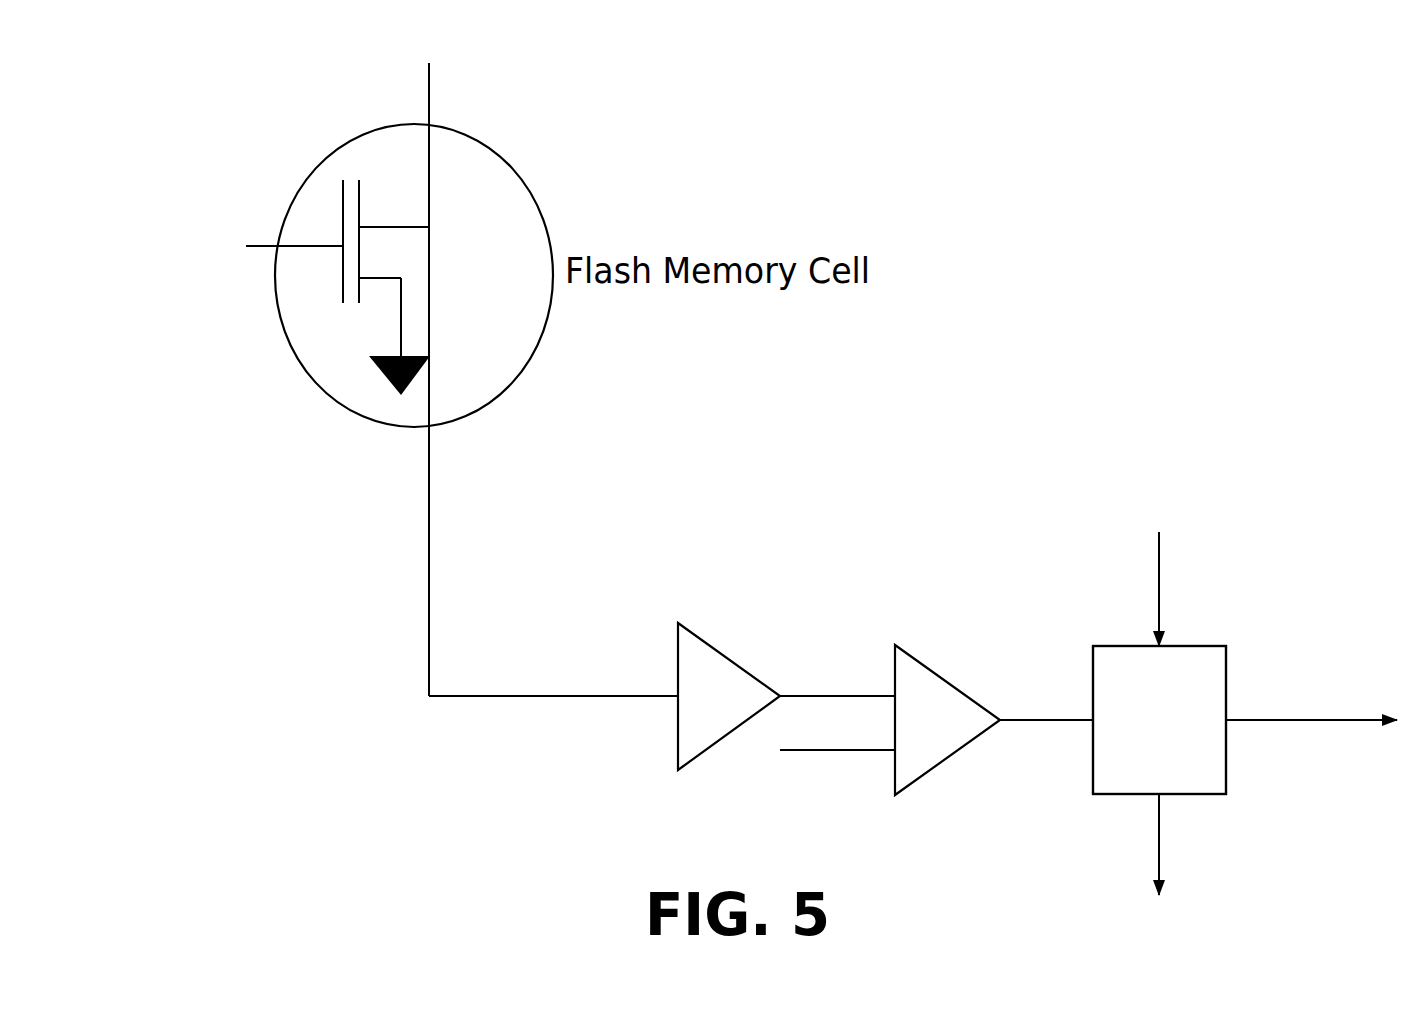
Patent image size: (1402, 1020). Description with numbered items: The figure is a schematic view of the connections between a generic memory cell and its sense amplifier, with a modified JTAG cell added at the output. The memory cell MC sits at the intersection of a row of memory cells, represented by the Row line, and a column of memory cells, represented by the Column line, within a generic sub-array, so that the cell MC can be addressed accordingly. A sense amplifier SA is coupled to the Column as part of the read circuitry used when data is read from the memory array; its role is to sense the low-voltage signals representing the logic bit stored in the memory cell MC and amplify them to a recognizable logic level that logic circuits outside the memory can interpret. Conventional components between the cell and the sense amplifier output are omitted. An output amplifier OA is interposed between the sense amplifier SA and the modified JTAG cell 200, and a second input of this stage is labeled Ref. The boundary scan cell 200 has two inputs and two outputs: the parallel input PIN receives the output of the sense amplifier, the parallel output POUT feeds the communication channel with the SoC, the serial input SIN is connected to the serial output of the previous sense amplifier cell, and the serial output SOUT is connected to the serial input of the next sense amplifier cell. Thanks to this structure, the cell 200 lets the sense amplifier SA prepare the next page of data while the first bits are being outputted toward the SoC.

The memory cell MC is at (303, 367).
The sense amplifier SA is at (675, 732).
The output amplifier OA is at (908, 658).
The modified JTAG cell 200 is at (1125, 646).
The column of memory cells Column is at (553, 379).
The row of memory cells Row is at (285, 220).
The reference input Ref is at (837, 774).
The parallel input PIN is at (1046, 695).
The parallel output POUT is at (1311, 695).
The serial input SIN is at (1196, 578).
The serial output SOUT is at (1214, 844).